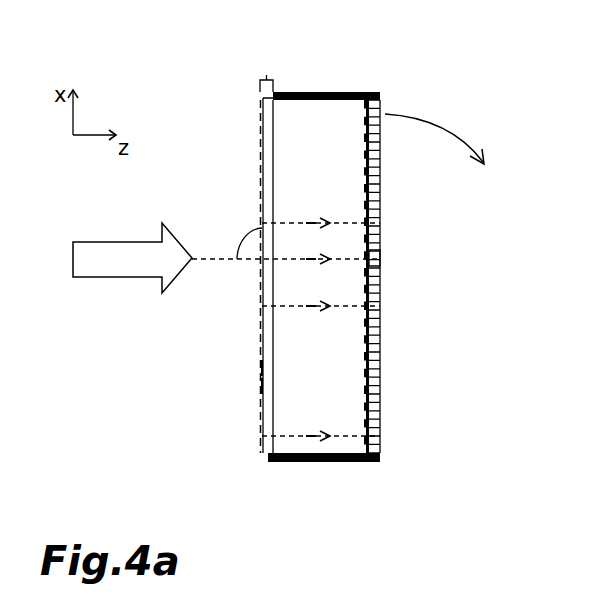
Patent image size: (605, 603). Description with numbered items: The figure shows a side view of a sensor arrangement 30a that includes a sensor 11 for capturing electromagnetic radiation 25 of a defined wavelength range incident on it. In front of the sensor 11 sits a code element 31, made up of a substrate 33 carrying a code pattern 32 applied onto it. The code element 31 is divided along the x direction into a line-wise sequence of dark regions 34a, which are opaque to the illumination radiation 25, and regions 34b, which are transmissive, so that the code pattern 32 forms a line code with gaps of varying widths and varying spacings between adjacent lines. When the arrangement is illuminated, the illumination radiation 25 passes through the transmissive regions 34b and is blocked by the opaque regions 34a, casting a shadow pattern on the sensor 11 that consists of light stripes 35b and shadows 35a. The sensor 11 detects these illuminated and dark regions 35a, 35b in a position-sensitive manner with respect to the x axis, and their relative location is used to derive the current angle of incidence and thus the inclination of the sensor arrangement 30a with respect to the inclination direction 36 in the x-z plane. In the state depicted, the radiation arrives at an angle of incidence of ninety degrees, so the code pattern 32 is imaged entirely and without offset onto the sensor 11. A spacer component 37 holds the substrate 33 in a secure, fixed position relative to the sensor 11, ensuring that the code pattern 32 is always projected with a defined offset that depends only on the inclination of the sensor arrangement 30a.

The sensor 11 is at (372, 255).
The illumination radiation 25 is at (112, 257).
The sensor arrangement 30a is at (325, 65).
The code element 31 is at (265, 66).
The code pattern 32 is at (256, 130).
The substrate 33 is at (268, 178).
The dark regions 34a is at (262, 368).
The transmissive regions 34b is at (262, 385).
The shadows 35a is at (366, 370).
The light stripes 35b is at (365, 328).
The inclination direction 36 is at (450, 130).
The spacer component 37 is at (380, 93).